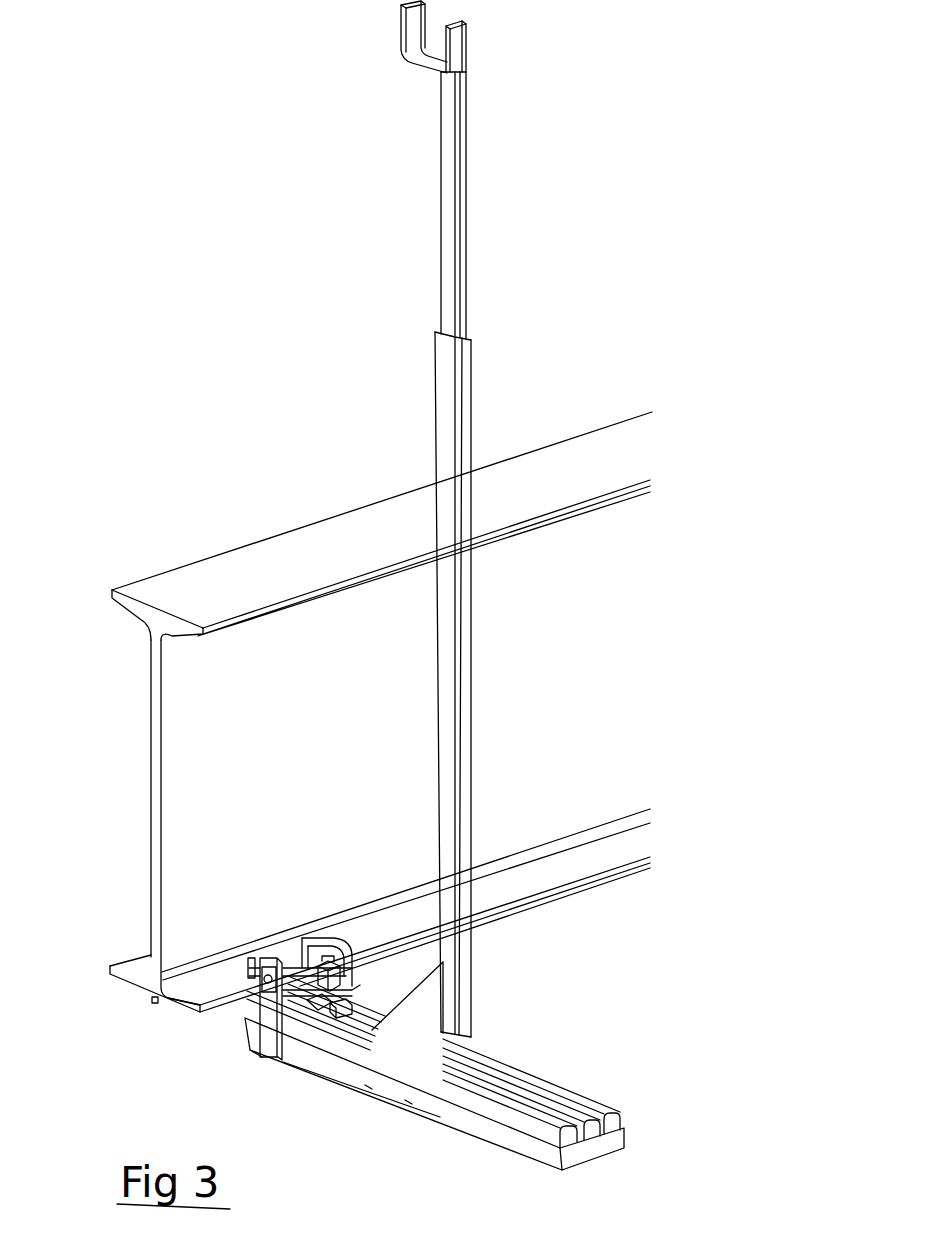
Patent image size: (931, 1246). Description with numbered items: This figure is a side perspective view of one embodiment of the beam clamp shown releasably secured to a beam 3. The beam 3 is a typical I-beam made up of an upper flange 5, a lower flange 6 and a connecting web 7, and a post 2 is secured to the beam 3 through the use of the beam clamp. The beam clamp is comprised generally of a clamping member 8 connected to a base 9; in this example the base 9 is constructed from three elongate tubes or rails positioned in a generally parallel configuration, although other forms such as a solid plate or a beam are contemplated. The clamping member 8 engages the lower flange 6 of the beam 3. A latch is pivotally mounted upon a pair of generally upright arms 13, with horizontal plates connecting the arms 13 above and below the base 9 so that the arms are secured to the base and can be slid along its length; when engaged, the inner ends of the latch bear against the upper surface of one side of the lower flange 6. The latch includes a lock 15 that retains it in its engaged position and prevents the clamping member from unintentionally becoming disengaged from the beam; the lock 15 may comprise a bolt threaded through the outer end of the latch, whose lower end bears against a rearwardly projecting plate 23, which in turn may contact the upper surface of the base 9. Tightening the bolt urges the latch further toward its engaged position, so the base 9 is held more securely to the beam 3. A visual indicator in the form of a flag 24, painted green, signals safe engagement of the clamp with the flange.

The post 2 is at (458, 393).
The beam 3 is at (272, 765).
The upper flange 5 is at (182, 578).
The lower flange 6 is at (135, 972).
The connecting web 7 is at (185, 728).
The clamping member 8 is at (260, 1008).
The base 9 is at (538, 1088).
The upright arm 13 is at (275, 1062).
The lock 15 is at (350, 947).
The rearwardly projecting plate 23 is at (340, 1005).
The flag 24 is at (328, 1012).